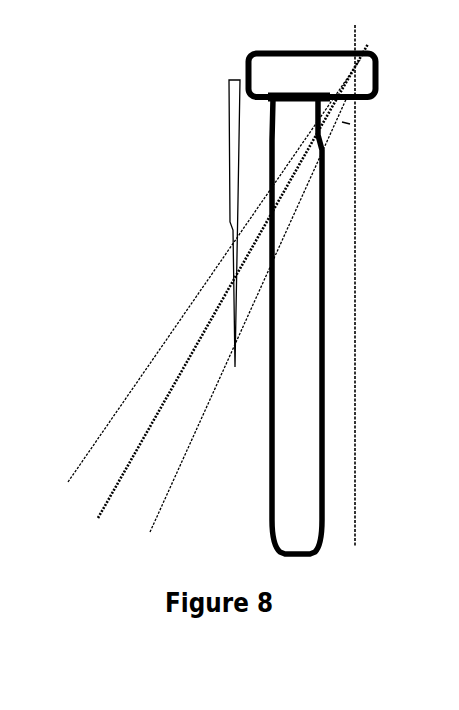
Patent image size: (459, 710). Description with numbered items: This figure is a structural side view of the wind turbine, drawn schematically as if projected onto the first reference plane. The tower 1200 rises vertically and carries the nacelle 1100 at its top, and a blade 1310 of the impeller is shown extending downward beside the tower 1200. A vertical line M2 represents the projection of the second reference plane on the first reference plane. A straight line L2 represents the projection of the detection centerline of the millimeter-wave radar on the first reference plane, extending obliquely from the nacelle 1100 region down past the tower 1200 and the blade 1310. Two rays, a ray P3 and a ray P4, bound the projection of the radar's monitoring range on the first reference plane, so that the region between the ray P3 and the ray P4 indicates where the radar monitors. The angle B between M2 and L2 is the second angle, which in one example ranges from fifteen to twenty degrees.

The nacelle 1100 is at (241, 57).
The tower 1200 is at (268, 397).
The blade 1310 is at (225, 150).
The projection of the second reference plane M2 is at (358, 296).
The projection of the detection centerline L2 is at (222, 297).
The ray P3 is at (206, 286).
The ray P4 is at (238, 327).
The second angle B is at (342, 122).